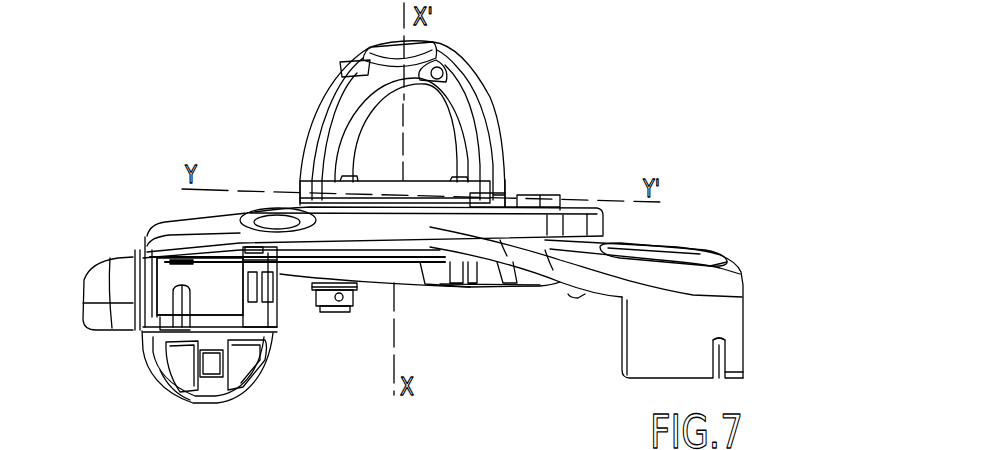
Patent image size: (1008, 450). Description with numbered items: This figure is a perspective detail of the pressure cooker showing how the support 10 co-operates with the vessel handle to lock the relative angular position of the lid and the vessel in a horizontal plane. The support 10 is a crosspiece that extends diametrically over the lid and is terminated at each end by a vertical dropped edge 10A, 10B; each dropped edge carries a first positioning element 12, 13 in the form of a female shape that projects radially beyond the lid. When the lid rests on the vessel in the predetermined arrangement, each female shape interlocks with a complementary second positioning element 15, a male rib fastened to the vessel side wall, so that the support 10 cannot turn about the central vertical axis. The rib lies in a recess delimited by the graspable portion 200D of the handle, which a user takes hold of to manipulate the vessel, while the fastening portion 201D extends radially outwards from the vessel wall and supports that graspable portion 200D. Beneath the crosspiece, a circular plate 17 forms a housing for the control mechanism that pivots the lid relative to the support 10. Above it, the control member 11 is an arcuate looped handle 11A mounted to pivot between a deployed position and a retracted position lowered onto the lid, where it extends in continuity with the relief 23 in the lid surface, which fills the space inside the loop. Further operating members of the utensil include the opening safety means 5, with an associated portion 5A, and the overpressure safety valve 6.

The support 10 is at (752, 279).
The dropped edge 10A is at (727, 325).
The dropped edge 10B is at (147, 250).
The control member 11 is at (484, 88).
The looped handle 11A is at (503, 152).
The first positioning element 12 is at (740, 362).
The first positioning element 13 is at (163, 283).
The second positioning element 15 is at (147, 358).
The plate 17 is at (423, 272).
The relief 23 is at (317, 194).
The graspable portion 200D is at (95, 292).
The fastening portion 201D is at (163, 380).
The overpressure safety valve 6 is at (355, 312).
The opening safety means 5 is at (228, 443).
The fastening member portion 5A is at (311, 443).